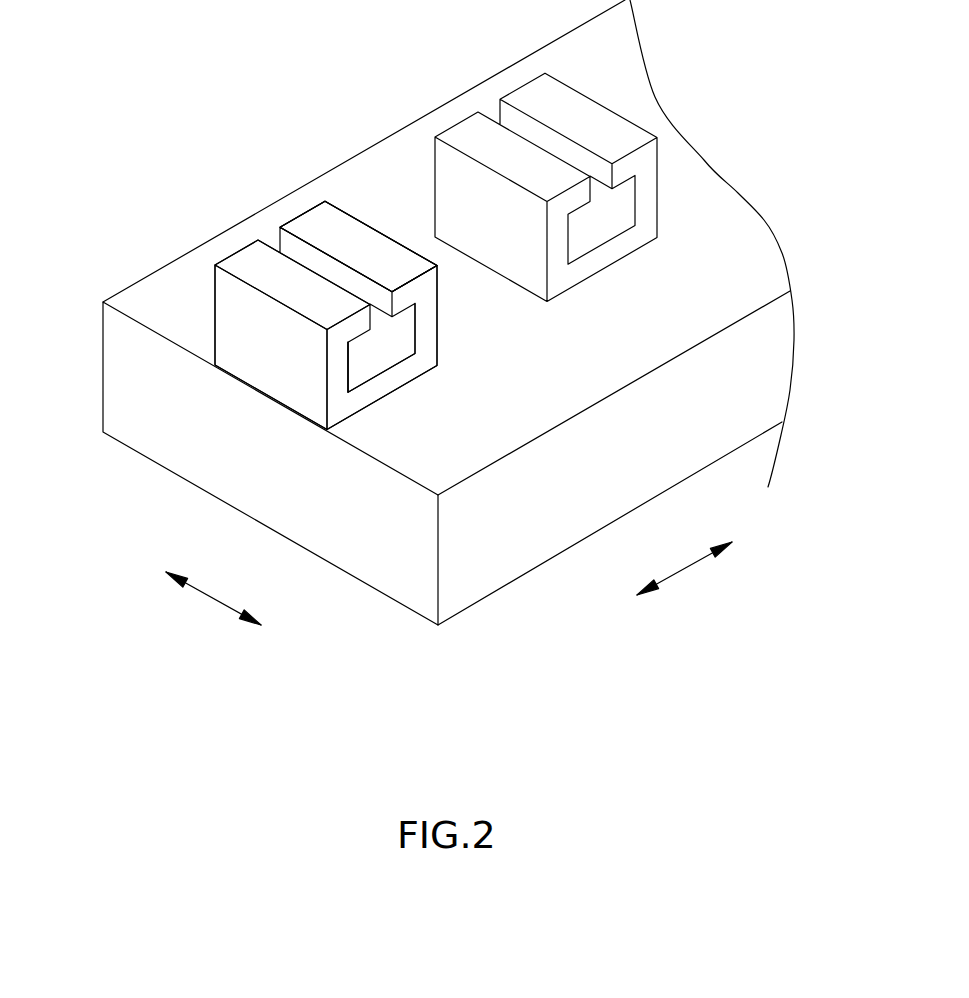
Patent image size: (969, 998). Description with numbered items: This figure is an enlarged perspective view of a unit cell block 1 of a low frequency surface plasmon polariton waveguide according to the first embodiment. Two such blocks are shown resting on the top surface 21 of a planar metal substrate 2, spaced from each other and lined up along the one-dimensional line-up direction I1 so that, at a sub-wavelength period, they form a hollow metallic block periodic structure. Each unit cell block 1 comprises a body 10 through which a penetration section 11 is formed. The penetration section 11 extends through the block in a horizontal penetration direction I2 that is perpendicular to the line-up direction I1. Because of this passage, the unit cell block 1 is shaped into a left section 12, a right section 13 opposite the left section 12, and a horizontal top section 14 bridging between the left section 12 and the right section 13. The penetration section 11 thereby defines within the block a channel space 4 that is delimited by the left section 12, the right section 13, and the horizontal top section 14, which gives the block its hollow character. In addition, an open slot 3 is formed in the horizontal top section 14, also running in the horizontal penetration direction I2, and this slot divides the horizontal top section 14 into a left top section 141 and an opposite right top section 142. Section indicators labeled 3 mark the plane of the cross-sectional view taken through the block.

The unit cell block 1 is at (377, 364).
The planar metal substrate 2 is at (522, 547).
The top surface 21 is at (753, 277).
The open slot 3 is at (260, 220).
The channel space 4 is at (408, 357).
The body 10 is at (357, 402).
The penetration section 11 is at (360, 362).
The left section 12 is at (237, 362).
The right section 13 is at (427, 322).
The horizontal top section 14 is at (354, 186).
The left top section 141 is at (303, 293).
The right top section 142 is at (385, 243).
The one-dimensional line-up direction I1 is at (682, 570).
The horizontal penetration direction I2 is at (215, 600).